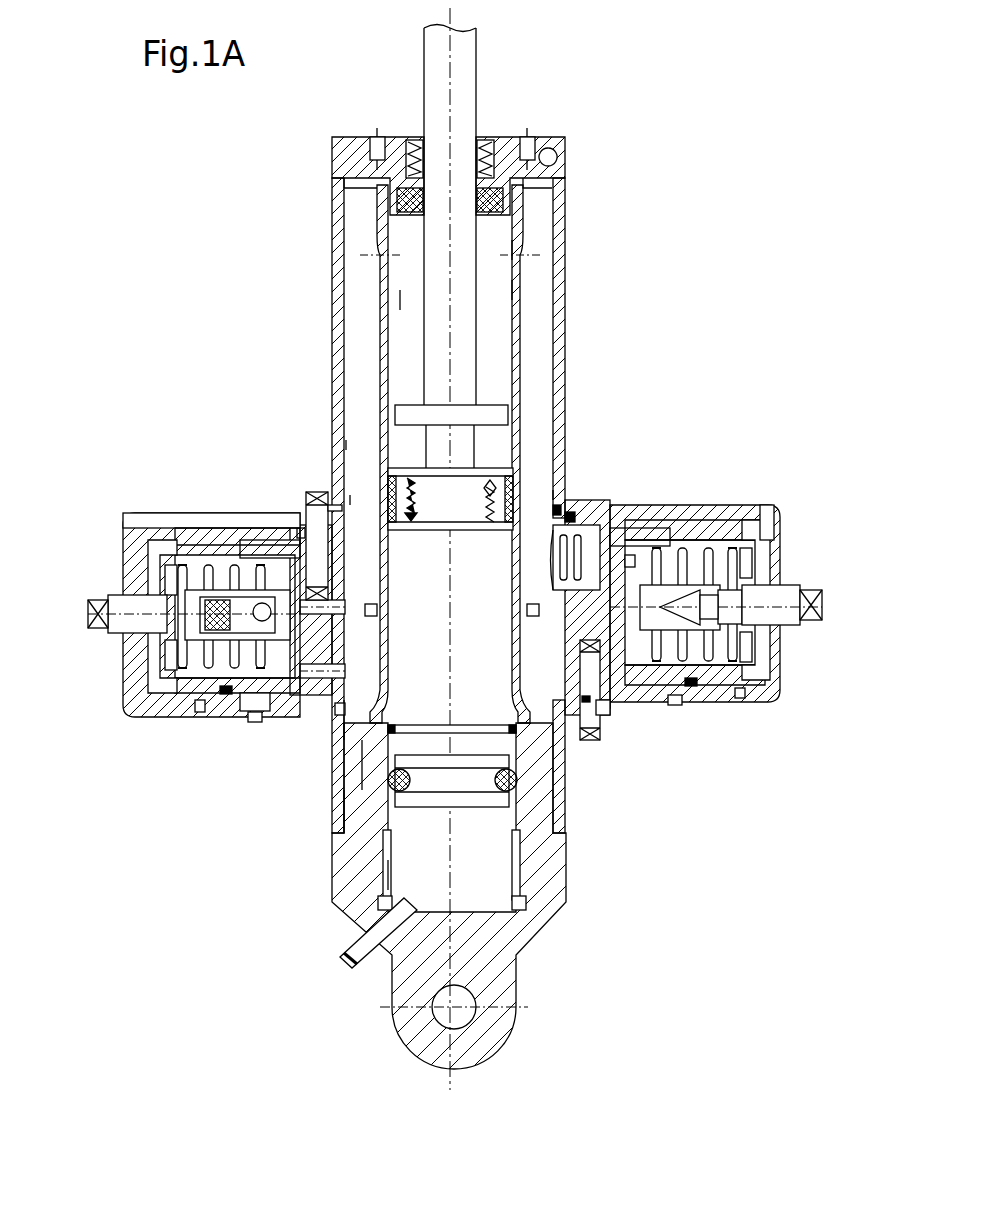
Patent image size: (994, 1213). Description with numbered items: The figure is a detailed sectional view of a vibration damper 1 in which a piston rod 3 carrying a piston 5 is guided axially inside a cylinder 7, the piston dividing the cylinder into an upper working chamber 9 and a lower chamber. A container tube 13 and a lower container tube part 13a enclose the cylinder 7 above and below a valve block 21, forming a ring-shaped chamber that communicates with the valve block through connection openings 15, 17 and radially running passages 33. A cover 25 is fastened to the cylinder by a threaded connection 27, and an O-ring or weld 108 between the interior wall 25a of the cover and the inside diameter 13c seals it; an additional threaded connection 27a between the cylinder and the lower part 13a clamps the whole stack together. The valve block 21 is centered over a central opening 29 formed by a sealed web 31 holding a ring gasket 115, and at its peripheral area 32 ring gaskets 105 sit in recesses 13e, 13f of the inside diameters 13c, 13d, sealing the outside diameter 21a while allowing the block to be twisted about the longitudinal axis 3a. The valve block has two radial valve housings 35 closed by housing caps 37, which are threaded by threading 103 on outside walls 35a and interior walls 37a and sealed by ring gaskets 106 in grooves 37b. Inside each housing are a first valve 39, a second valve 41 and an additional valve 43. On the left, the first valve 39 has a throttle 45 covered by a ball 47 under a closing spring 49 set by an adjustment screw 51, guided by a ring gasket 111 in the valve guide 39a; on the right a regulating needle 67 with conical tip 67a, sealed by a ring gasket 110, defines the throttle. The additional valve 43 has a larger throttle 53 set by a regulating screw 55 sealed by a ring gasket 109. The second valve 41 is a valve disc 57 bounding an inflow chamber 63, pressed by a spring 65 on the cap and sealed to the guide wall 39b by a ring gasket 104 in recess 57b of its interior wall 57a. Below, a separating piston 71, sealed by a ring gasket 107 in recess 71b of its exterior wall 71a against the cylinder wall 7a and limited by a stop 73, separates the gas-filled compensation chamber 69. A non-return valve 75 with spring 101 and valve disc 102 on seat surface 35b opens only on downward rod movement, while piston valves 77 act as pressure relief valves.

The vibration damper 1 is at (160, 880).
The piston rod 3 is at (462, 87).
The longitudinal axis of the piston rod 3a is at (447, 18).
The piston 5 is at (558, 470).
The cylinder 7 is at (520, 347).
The interior wall of the cylinder 7a is at (520, 300).
The upper working chamber 9 is at (403, 306).
The container tube 13 is at (338, 333).
The lower container tube part 13a is at (568, 870).
The inside diameter of the upper container tube part 13c is at (572, 512).
The inside diameter of the lower container tube part 13d is at (342, 787).
The circumferential recess in the upper container tube part 13e is at (342, 455).
The circumferential recess in the lower container tube part 13f is at (342, 744).
The upper connection opening 15 is at (522, 247).
The lower connection opening 17 is at (520, 758).
The valve block 21 is at (292, 700).
The outside diameter of the valve block 21a is at (605, 513).
The cover 25 is at (558, 160).
The interior wall of the cover 25a is at (550, 150).
The threaded connection 27 is at (527, 214).
The additional threaded connection 27a is at (348, 953).
The central opening 29 is at (450, 546).
The sealed web 31 is at (354, 503).
The peripheral area 32 is at (562, 505).
The passages 33 is at (450, 605).
The valve housing 35 is at (225, 716).
The outside wall of the valve housing 35a is at (610, 715).
The valve seat surface 35b is at (627, 513).
The housing cap 37 is at (150, 642).
The interior wall of the housing cap 37a is at (197, 513).
The circumferential groove 37b is at (222, 515).
The first valve 39 is at (188, 702).
The valve guide 39a is at (178, 656).
The outside diameter wall of the valve guide 39b is at (130, 696).
The second valve 41 is at (275, 540).
The additional valve 43 is at (307, 520).
The throttle 45 is at (673, 517).
The ball 47 is at (200, 588).
The closing spring 49 is at (240, 600).
The adjustment screw 51 is at (110, 612).
The throttle 53 is at (292, 552).
The regulating screw 55 is at (317, 495).
The valve disc 57 is at (233, 553).
The interior wall of the valve disc 57a is at (205, 545).
The circumferential recess 57b is at (160, 562).
The inflow chamber 63 is at (240, 665).
The spring 65 is at (747, 510).
The regulating needle 67 is at (790, 605).
The conical tip 67a is at (760, 600).
The compensation chamber 69 is at (500, 885).
The separating piston 71 is at (512, 792).
The exterior wall of the separating piston 71a is at (516, 800).
The circumferential recess 71b is at (517, 780).
The stop 73 is at (362, 782).
The non-return valve 75 is at (582, 542).
The piston valves 77 is at (412, 520).
The spring 101 is at (500, 530).
The valve disc 102 is at (617, 513).
The threading 103 is at (198, 712).
The ring gasket 104 is at (225, 692).
The ring gasket 105 is at (340, 540).
The ring gasket 106 is at (255, 720).
The ring gasket 107 is at (382, 871).
The O-ring or weld 108 is at (355, 165).
The ring gasket 109 is at (300, 530).
The ring gasket 110 is at (720, 600).
The ring gasket 111 is at (175, 610).
The seal ring 115 is at (375, 616).